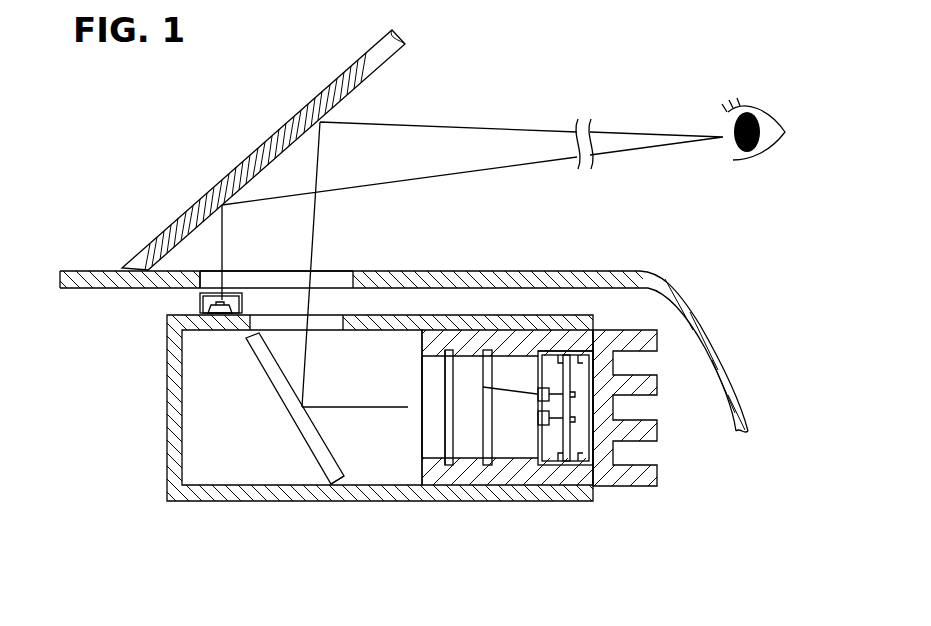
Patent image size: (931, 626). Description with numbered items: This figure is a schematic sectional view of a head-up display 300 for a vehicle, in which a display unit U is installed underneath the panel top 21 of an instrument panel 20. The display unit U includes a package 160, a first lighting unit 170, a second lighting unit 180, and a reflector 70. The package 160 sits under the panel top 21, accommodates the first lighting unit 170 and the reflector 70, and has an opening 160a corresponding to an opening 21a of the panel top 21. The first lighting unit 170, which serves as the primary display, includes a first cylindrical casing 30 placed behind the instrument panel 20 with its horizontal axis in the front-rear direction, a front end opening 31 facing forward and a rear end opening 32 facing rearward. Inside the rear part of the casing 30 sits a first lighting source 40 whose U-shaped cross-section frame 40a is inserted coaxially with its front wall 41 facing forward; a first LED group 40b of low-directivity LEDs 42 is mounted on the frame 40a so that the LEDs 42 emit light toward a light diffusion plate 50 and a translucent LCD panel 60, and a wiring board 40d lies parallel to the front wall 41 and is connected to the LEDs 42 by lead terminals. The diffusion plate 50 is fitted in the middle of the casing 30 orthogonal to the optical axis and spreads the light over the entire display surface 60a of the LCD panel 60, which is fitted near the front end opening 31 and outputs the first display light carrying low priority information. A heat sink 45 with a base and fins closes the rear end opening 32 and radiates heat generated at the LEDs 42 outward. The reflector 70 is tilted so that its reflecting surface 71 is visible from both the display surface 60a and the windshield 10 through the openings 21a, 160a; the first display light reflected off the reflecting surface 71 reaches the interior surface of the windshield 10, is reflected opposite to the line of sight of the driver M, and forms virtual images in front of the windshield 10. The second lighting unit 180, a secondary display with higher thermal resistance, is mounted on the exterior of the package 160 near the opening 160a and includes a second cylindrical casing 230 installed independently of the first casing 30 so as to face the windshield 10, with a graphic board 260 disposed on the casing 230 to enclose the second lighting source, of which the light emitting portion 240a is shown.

The windshield 10 is at (373, 77).
The instrument panel 20 is at (712, 326).
The panel top 21 is at (510, 278).
The opening of panel top 21a is at (210, 272).
The first cylindrical casing 30 is at (530, 476).
The front end opening 31 is at (423, 361).
The rear end opening 32 is at (600, 458).
The first lighting source 40 is at (566, 469).
The U-shaped cross-section frame 40a is at (562, 351).
The first LED group 40b is at (537, 410).
The wiring board 40d is at (572, 431).
The front wall 41 is at (538, 442).
The LEDs 42 is at (537, 422).
The heat sink 45 is at (648, 385).
The light diffusion plate 50 is at (481, 438).
The translucent LCD panel 60 is at (442, 425).
The display surface 60a is at (444, 382).
The reflector 70 is at (314, 470).
The reflecting surface 71 is at (340, 465).
The package 160 is at (174, 416).
The opening of package 160a is at (249, 322).
The first lighting unit 170 is at (425, 488).
The second lighting unit 180 is at (235, 270).
The second cylindrical casing 230 is at (200, 302).
The light emitting portion 240a is at (220, 315).
The graphic board 260 is at (232, 276).
The head-up display 300 is at (688, 491).
The driver M is at (760, 112).
The display unit U is at (160, 503).